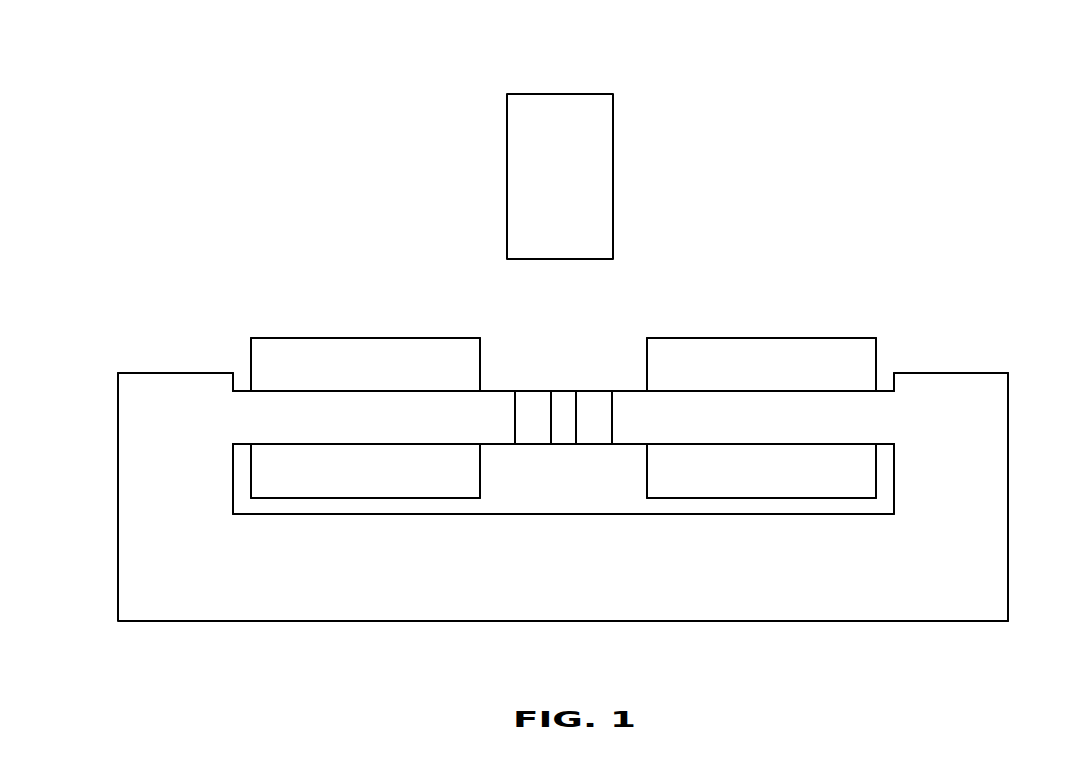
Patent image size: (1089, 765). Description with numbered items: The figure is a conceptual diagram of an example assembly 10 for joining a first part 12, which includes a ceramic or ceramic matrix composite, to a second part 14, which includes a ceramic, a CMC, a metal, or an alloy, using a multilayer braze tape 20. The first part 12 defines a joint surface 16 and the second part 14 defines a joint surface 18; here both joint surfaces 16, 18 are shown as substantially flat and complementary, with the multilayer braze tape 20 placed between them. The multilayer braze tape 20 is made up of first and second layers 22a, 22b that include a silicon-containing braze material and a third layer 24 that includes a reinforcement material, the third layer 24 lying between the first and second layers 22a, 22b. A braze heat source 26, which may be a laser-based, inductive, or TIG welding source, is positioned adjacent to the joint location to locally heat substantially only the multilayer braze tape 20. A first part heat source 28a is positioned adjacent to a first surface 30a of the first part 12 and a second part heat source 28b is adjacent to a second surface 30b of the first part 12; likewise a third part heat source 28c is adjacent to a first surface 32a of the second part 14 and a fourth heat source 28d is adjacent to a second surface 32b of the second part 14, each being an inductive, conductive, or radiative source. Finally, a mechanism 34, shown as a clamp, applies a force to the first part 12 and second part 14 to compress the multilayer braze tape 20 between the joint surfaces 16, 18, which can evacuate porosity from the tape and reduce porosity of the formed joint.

The assembly 10 is at (275, 78).
The first part 12 is at (252, 418).
The second part 14 is at (877, 418).
The joint surface 16 is at (515, 413).
The joint surface 18 is at (612, 415).
The multilayer braze tape 20 is at (542, 373).
The first layer 22a is at (535, 435).
The second layer 22b is at (593, 398).
The third layer 24 is at (562, 435).
The braze heat source 26 is at (523, 200).
The first part heat source 28a is at (260, 363).
The second part heat source 28b is at (268, 472).
The third part heat source 28c is at (865, 367).
The fourth heat source 28d is at (858, 470).
The first surface 30a is at (335, 390).
The second surface 30b is at (327, 445).
The first surface 32a is at (790, 390).
The second surface 32b is at (798, 445).
The mechanism 34 is at (135, 568).